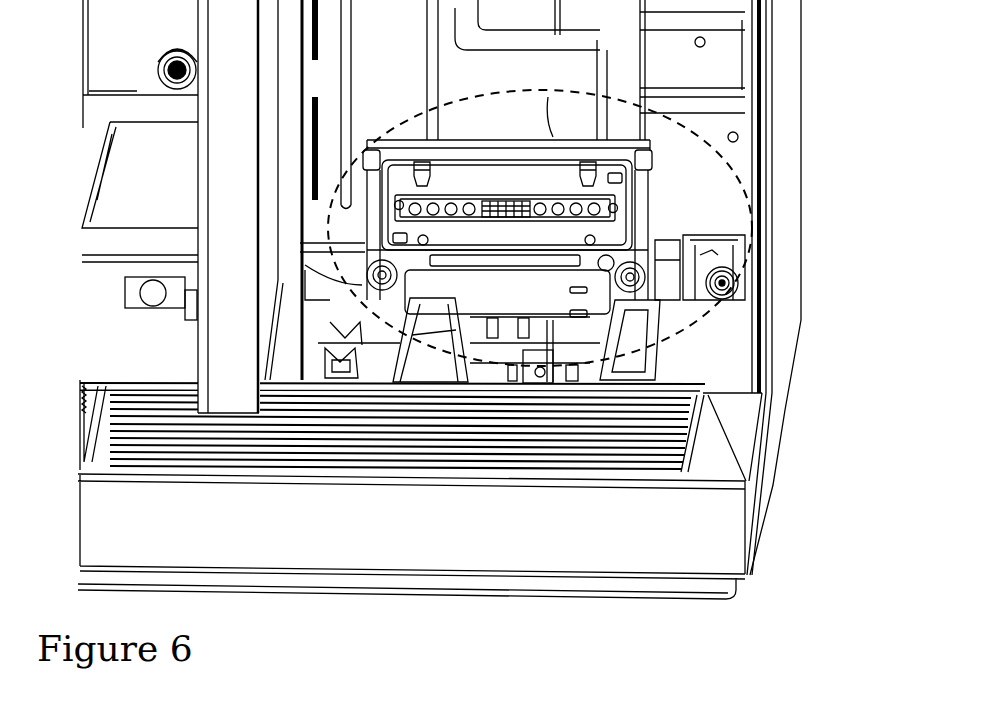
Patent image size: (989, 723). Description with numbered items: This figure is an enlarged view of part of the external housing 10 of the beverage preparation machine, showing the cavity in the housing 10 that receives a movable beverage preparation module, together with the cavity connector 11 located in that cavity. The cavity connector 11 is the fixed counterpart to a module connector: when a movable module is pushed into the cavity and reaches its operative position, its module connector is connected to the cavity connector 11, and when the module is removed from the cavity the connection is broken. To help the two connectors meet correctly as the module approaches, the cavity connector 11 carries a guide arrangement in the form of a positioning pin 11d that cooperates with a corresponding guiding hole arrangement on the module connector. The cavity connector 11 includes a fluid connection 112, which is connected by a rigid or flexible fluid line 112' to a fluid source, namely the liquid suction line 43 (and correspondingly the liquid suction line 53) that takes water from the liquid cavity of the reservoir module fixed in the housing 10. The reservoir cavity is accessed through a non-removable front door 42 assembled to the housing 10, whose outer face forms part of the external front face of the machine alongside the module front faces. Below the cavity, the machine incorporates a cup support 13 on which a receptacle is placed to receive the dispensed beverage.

The external housing 10 is at (787, 93).
The cavity connector 11 is at (412, 116).
The positioning pin 11d is at (396, 238).
The cup support 13 is at (665, 556).
The front door 42 is at (222, 177).
The liquid suction line 43 is at (167, 55).
The liquid suction line 53 is at (724, 282).
The fluid connection 112 is at (713, 245).
The fluid line 112' is at (454, 224).